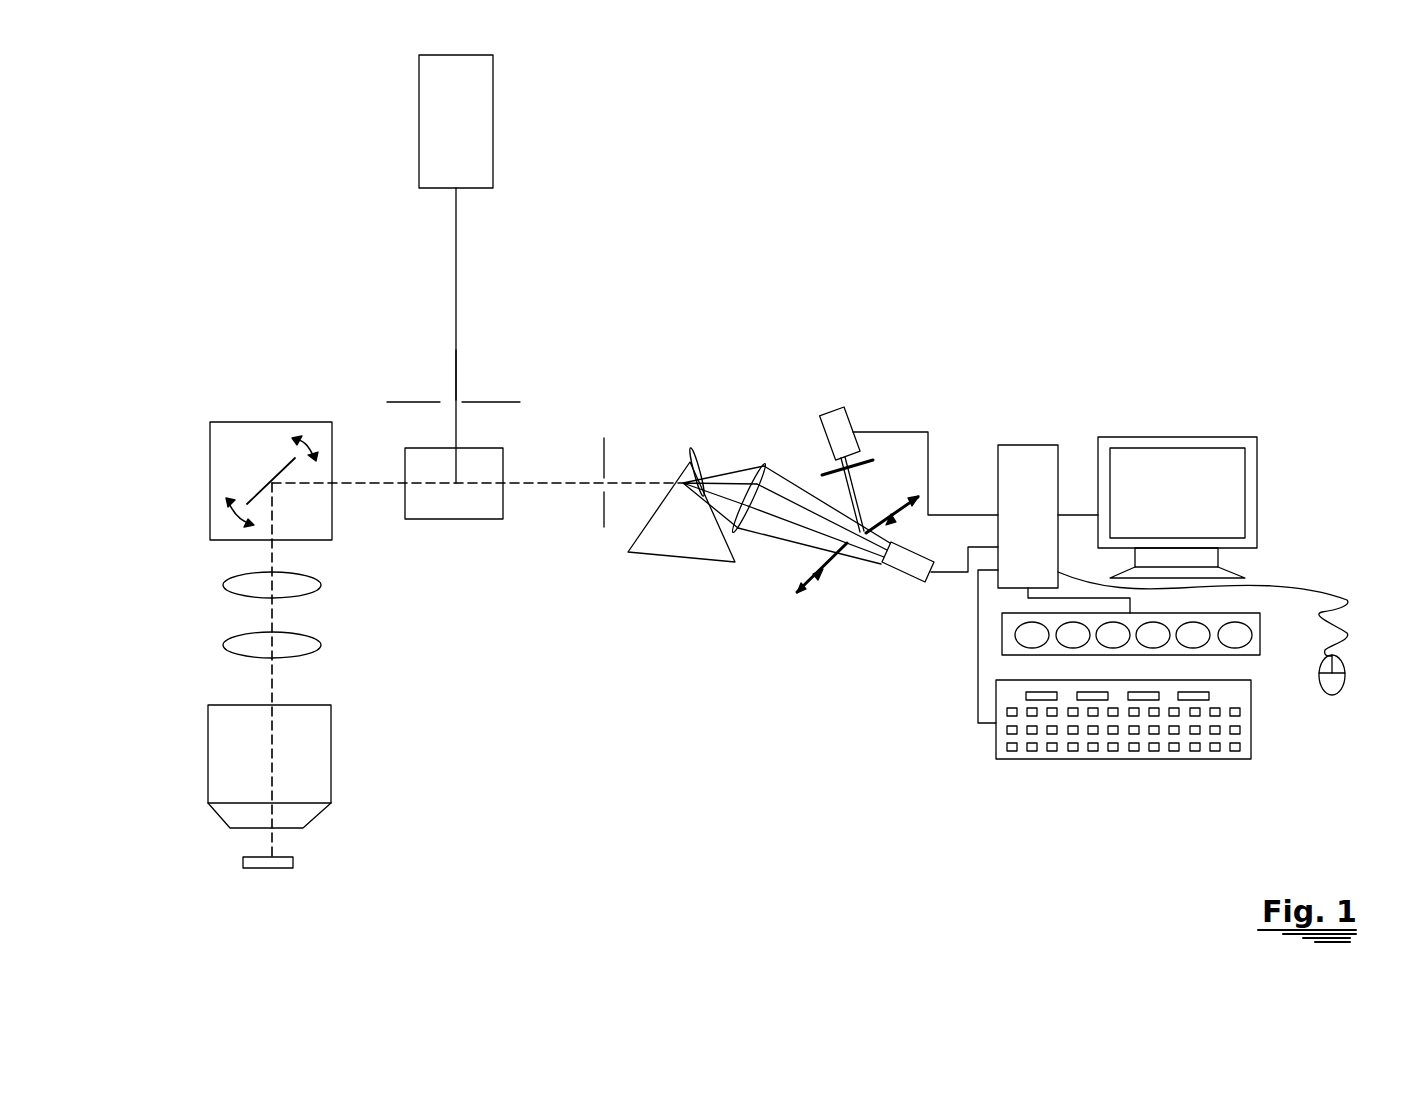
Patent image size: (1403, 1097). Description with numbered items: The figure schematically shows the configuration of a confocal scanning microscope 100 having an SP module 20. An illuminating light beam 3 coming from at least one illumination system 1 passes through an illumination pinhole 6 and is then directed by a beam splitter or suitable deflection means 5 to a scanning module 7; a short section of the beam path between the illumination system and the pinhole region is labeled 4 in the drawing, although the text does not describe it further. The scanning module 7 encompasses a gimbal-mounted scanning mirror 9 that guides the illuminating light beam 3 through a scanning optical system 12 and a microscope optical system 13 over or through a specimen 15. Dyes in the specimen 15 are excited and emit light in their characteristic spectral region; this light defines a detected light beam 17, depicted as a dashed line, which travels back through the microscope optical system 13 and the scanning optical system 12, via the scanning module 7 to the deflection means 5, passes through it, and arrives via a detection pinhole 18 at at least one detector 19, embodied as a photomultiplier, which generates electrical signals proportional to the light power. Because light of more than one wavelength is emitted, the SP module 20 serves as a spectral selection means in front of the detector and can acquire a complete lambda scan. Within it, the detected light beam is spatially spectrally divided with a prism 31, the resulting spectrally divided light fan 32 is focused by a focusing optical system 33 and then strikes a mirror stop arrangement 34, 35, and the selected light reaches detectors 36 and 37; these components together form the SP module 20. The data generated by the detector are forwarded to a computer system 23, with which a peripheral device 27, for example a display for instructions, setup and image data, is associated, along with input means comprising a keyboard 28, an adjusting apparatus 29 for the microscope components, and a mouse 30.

The illumination system 1 is at (481, 100).
The illuminating light beam 3 is at (456, 225).
The light beam section 4 is at (455, 370).
The deflection means 5 is at (478, 513).
The illumination pinhole 6 is at (407, 402).
The scanning module 7 is at (235, 445).
The scanning mirror 9 is at (260, 488).
The scanning optical system 12 is at (245, 583).
The microscope optical system 13 is at (233, 735).
The specimen 15 is at (257, 857).
The detected light beam 17 is at (513, 485).
The detection pinhole 18 is at (605, 452).
The detector 19 is at (716, 628).
The SP module 20 is at (786, 450).
The computer system 23 is at (1067, 420).
The peripheral device 27 is at (1152, 463).
The keyboard 28 is at (1233, 697).
The adjusting apparatus 29 is at (1177, 618).
The mouse 30 is at (1333, 686).
The prism 31 is at (680, 550).
The spectrally divided light fan 32 is at (691, 447).
The focusing optical system 33 is at (736, 545).
The mirror stop arrangement 34 is at (845, 558).
The mirror stop arrangement 35 is at (882, 508).
The detector 36 is at (887, 570).
The detector 37 is at (822, 415).
The confocal scanning microscope 100 is at (536, 360).